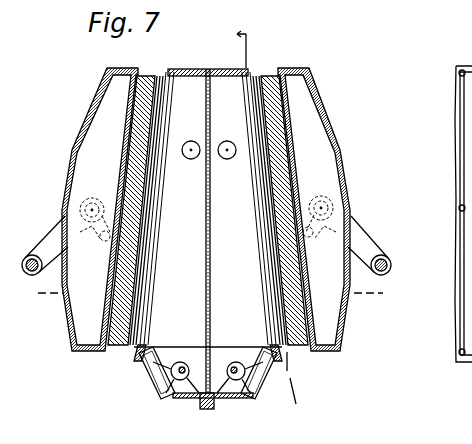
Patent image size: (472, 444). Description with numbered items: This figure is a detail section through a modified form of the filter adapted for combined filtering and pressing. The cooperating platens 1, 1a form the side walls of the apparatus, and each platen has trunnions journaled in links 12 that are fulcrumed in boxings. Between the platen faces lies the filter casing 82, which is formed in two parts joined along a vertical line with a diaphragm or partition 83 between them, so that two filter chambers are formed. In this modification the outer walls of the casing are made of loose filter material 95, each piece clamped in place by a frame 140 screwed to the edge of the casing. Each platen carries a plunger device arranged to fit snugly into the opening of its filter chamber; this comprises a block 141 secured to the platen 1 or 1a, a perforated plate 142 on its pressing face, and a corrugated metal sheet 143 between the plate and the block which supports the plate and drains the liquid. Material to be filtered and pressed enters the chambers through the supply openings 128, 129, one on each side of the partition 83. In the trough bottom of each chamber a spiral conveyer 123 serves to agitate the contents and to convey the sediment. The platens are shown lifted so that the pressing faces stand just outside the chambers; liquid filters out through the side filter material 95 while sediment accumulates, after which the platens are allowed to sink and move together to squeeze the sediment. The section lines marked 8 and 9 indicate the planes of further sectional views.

The platen 1 is at (100, 209).
The platen 1a is at (321, 144).
The section line 8- 8 is at (272, 221).
The section line 9- 9 is at (211, 306).
The link 12 is at (53, 232).
The filter casing 82 is at (184, 227).
The diaphragm 83 is at (211, 305).
The lining strip 95 is at (147, 284).
The spiral conveyer 123 is at (160, 372).
The supply opening 128 is at (190, 159).
The supply opening 129 is at (229, 159).
The frame 140 is at (249, 73).
The block 141 is at (120, 272).
The perforated plate 142 is at (165, 78).
The corrugated sheet 143 is at (157, 77).